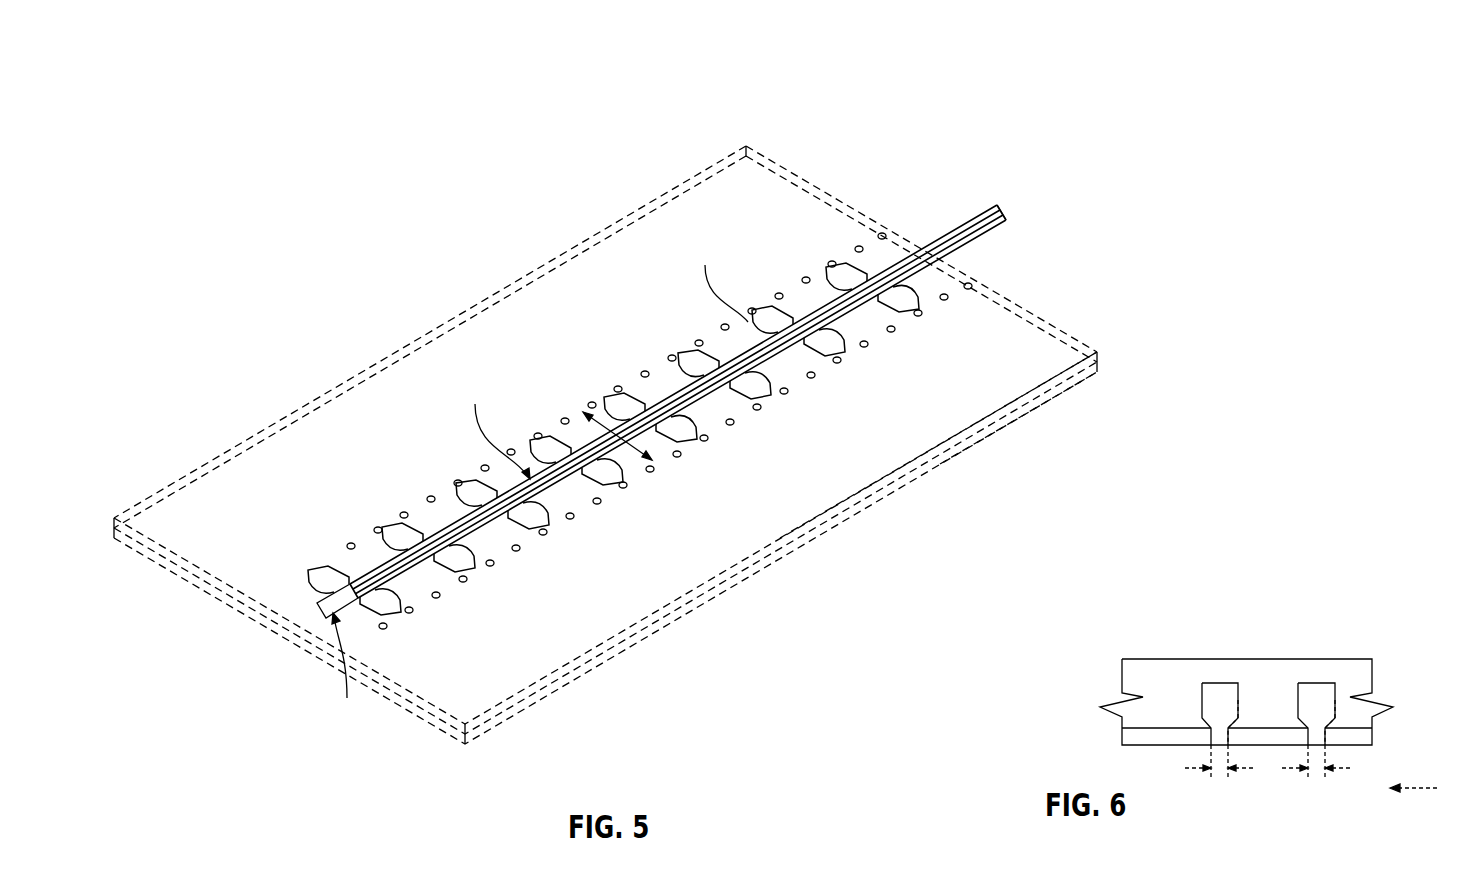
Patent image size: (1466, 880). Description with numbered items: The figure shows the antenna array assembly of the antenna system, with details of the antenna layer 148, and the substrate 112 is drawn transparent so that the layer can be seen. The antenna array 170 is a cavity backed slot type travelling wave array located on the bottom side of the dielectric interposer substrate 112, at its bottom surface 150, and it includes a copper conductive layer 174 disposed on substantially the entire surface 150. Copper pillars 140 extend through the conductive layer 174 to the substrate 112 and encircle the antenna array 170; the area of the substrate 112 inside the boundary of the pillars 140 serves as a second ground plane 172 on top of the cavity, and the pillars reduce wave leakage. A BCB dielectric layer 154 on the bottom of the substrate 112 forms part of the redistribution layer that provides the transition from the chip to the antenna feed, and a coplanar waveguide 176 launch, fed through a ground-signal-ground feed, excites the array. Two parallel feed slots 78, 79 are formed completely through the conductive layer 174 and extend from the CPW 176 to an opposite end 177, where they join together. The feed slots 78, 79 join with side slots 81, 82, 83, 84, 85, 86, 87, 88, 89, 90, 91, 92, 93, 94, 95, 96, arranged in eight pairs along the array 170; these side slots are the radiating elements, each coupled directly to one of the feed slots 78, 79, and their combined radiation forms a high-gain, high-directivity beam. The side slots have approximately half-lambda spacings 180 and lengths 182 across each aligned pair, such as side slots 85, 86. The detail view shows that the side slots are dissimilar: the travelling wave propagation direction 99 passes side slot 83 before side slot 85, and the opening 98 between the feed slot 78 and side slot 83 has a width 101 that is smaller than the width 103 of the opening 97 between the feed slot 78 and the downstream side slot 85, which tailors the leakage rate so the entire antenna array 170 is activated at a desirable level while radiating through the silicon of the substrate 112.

In FIG. 5, the feed slot 78 is at (900, 256).
In FIG. 6, the feed slot 78 is at (1363, 740).
In FIG. 5, the feed slot 79 is at (912, 280).
In FIG. 5, the side slot 81 is at (842, 260).
In FIG. 5, the side slot 82 is at (905, 318).
In FIG. 5, the side slot 83 is at (766, 320).
In FIG. 6, the side slot 83 is at (1323, 693).
In FIG. 5, the side slot 84 is at (829, 360).
In FIG. 5, the side slot 85 is at (700, 353).
In FIG. 6, the side slot 85 is at (1222, 694).
In FIG. 5, the side slot 86 is at (755, 403).
In FIG. 5, the side slot 87 is at (620, 390).
In FIG. 5, the side slot 88 is at (681, 446).
In FIG. 5, the side slot 89 is at (546, 433).
In FIG. 5, the side slot 90 is at (607, 490).
In FIG. 5, the side slot 91 is at (472, 476).
In FIG. 5, the side slot 92 is at (533, 533).
In FIG. 5, the side slot 93 is at (398, 519).
In FIG. 5, the side slot 94 is at (459, 576).
In FIG. 5, the side slot 95 is at (324, 562).
In FIG. 5, the side slot 96 is at (385, 619).
In FIG. 6, the opening 97 is at (1232, 718).
In FIG. 6, the opening 98 is at (1328, 720).
In FIG. 6, the travelling wave propagation direction 99 is at (1428, 789).
In FIG. 6, the width 101 is at (1347, 770).
In FIG. 6, the width 103 is at (1182, 770).
In FIG. 5, the substrate 112 is at (598, 643).
In FIG. 5, the copper pillars 140 is at (431, 497).
In FIG. 5, the antenna layer 148 is at (545, 676).
In FIG. 5, the bottom surface 150 is at (909, 476).
In FIG. 5, the BCB dielectric layer 154 is at (496, 721).
In FIG. 5, the antenna array 170 is at (326, 667).
In FIG. 5, the second ground plane 172 is at (492, 426).
In FIG. 5, the conductive layer 174 is at (1031, 404).
In FIG. 5, the coplanar waveguide 176 is at (1013, 217).
In FIG. 5, the end 177 is at (320, 604).
In FIG. 5, the spacing 180 is at (716, 278).
In FIG. 5, the length 182 is at (583, 412).